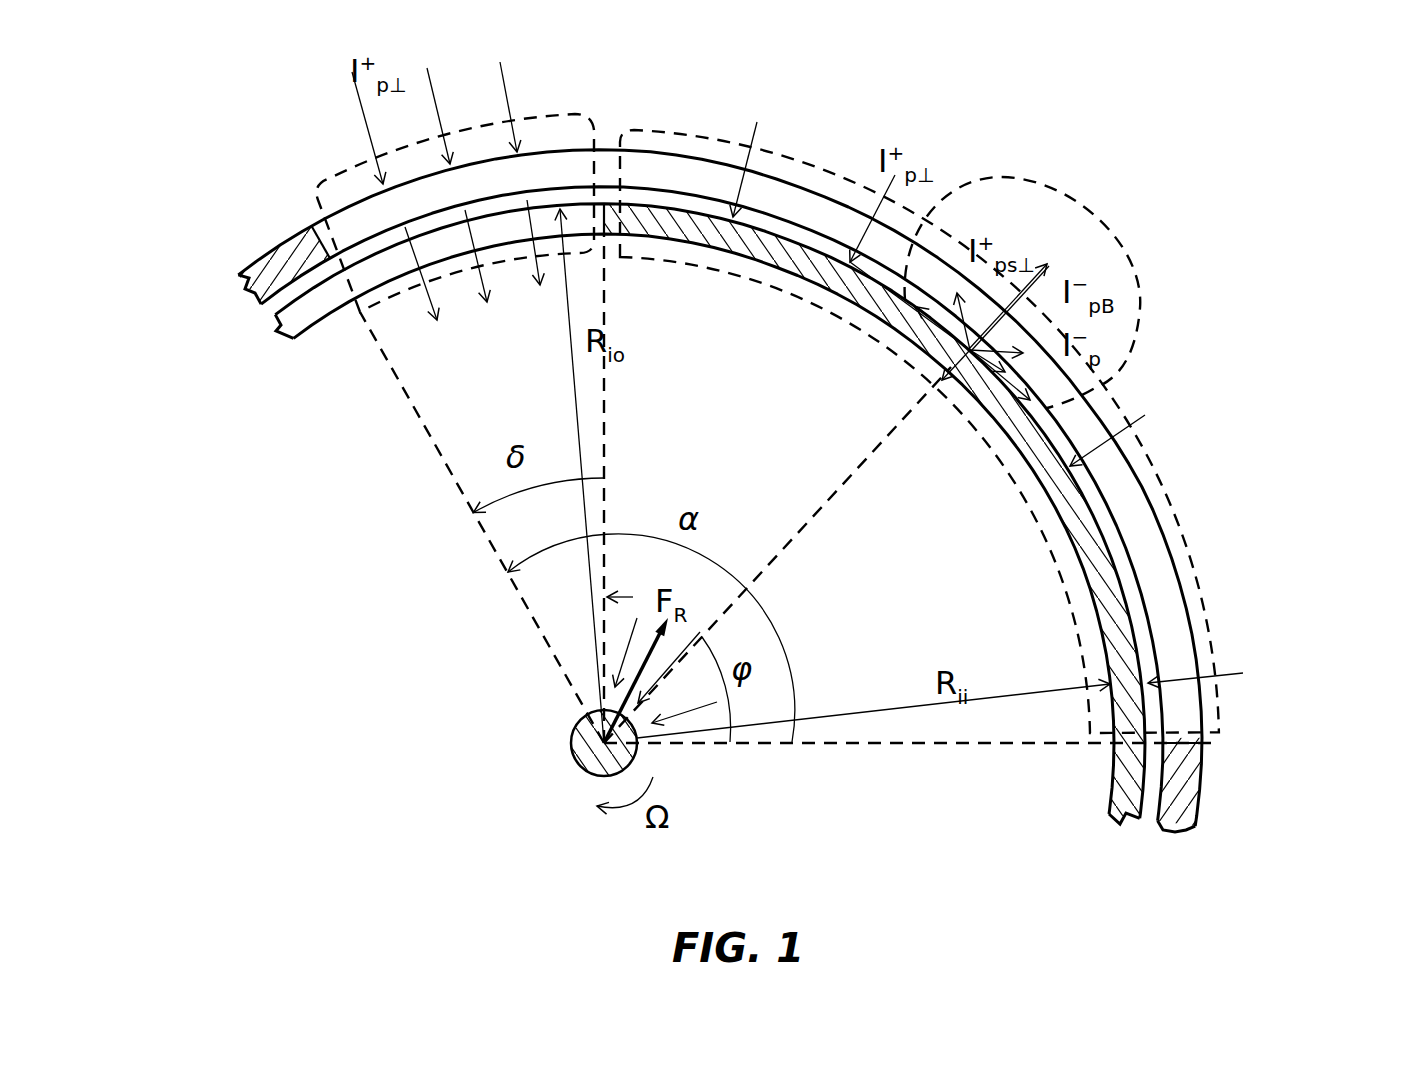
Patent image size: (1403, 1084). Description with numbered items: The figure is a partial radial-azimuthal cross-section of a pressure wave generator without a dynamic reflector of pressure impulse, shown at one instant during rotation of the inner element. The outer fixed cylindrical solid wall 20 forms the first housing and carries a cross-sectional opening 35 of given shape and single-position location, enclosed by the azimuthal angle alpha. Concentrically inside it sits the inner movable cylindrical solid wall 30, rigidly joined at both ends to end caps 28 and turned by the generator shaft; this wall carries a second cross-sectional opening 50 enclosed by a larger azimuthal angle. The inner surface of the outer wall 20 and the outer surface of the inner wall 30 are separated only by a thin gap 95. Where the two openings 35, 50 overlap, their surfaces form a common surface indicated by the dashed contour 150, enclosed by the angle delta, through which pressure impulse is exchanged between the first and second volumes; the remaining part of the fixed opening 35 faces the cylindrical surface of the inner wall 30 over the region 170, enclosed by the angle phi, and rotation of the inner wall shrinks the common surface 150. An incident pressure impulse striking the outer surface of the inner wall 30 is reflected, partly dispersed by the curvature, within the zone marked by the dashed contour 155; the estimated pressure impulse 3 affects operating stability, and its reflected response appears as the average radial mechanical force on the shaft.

The estimated pressure impulse 3 is at (583, 727).
The outer fixed cylindrical solid wall 20 is at (744, 521).
The end caps 28 is at (918, 558).
The inner movable cylindrical solid wall 30 is at (710, 549).
The cross-sectional opening 35 is at (1157, 572).
The cross-sectional opening 50 is at (303, 320).
The thin gap 95 is at (296, 284).
The dashed contour of the common surface 150 is at (570, 118).
The dashed contour of the spatial surface zone 155 is at (1033, 186).
The intersecting surface of the opening and the cylindrical wall 170 is at (1163, 460).